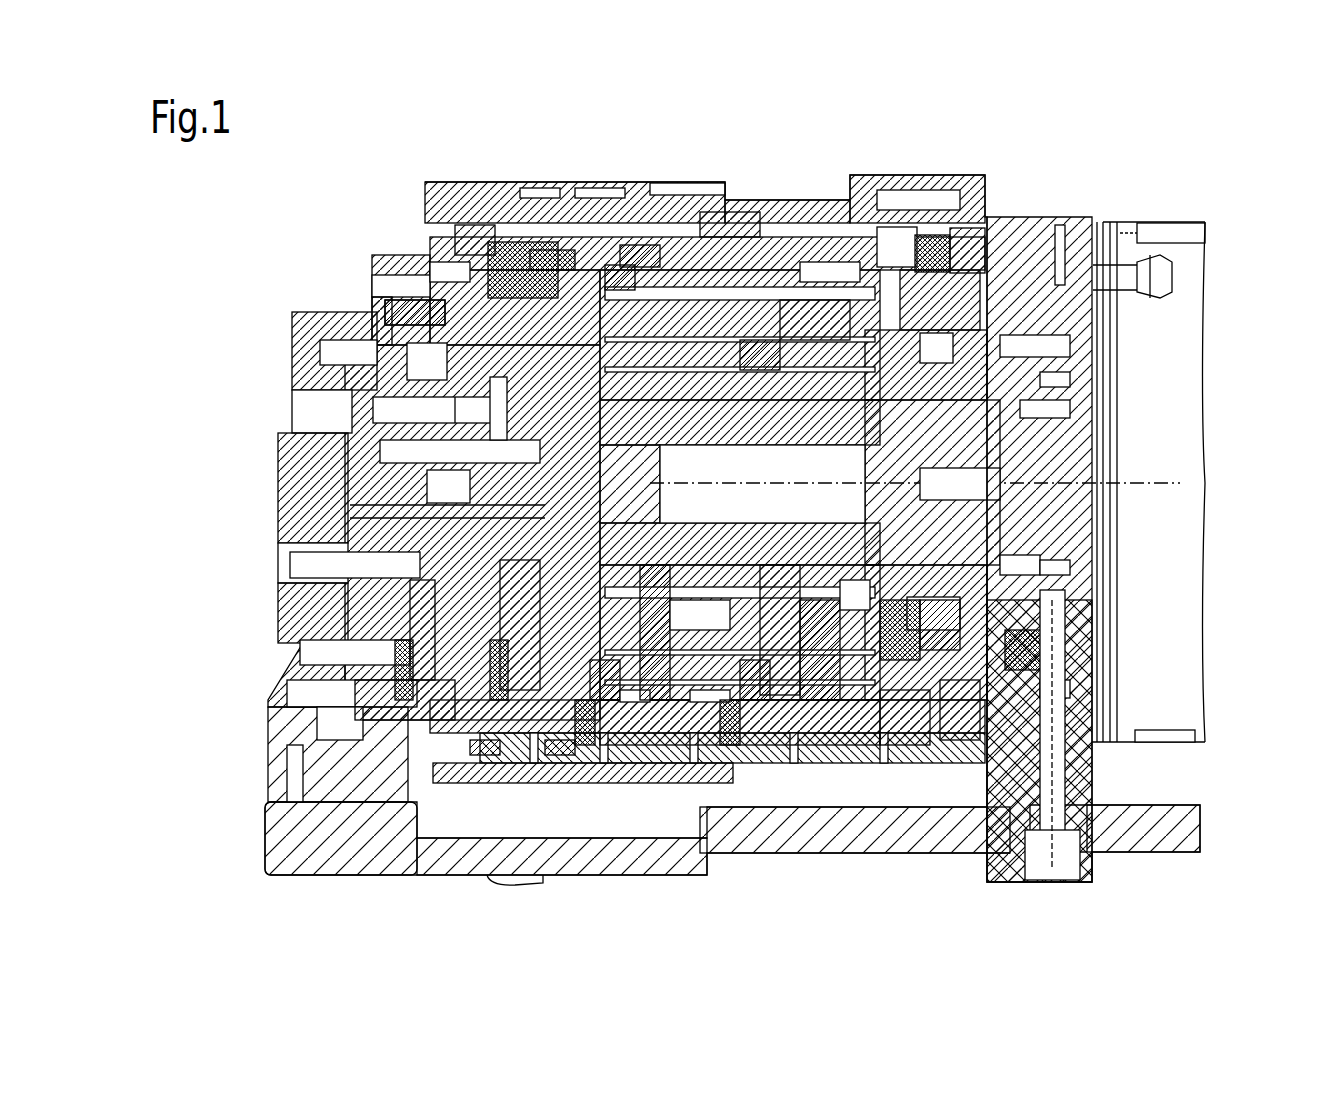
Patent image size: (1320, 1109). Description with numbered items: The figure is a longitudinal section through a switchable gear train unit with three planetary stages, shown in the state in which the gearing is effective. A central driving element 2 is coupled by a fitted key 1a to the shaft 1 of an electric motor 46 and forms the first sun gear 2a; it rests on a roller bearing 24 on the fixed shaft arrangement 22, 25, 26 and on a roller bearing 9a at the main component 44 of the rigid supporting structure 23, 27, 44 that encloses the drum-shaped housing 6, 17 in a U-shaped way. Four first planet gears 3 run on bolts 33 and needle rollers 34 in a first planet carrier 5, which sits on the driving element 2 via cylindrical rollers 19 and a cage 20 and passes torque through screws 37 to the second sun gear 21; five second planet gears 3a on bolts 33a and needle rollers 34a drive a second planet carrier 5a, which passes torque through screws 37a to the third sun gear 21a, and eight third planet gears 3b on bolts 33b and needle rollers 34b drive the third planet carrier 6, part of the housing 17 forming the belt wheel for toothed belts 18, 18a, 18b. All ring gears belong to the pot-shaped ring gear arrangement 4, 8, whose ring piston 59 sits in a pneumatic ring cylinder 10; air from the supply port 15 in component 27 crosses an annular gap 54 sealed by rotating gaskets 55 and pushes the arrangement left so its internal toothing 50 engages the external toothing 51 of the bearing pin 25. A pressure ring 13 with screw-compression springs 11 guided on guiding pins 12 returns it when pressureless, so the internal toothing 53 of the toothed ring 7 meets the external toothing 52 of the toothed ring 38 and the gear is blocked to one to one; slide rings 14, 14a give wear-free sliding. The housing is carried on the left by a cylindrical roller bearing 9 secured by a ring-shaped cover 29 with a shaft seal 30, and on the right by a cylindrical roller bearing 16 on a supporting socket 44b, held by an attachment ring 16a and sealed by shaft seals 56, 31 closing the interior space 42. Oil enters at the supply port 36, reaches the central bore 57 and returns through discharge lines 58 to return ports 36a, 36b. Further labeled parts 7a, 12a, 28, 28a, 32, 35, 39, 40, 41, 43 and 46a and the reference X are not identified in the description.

The shaft 1 is at (1040, 490).
The fitted key 1a is at (1055, 440).
The central driving element 2 is at (1060, 535).
The first sun gear 2a is at (625, 700).
The first planet gears 3 is at (610, 740).
The second planet gears 3a is at (700, 740).
The third planet gears 3b is at (890, 720).
The pot-shaped ring gear arrangement 4 is at (685, 690).
The first planet carrier 5 is at (655, 700).
The second planet carrier 5a is at (822, 700).
The third planet carrier 6 is at (1080, 790).
The toothed ring 7 is at (515, 690).
The sun gear 7a is at (540, 247).
The pot-shaped ring gear arrangement 8 is at (470, 720).
The cylindrical roller bearing 9 is at (303, 643).
The roller bearing 9a is at (1070, 570).
The pneumatic ring cylinder 10 is at (1045, 225).
The screw-compression springs 11 is at (452, 295).
The guiding pins 12 is at (420, 258).
The cover flange 12a is at (378, 298).
The pressure ring 13 is at (470, 245).
The slide ring 14 is at (485, 295).
The slide ring 14a is at (980, 225).
The supply port 15 is at (283, 487).
The cylindrical roller bearing 16 is at (1065, 650).
The attachment ring 16a is at (1100, 690).
The housing 17 is at (730, 300).
The toothed belt 18 is at (482, 200).
The toothed belt 18a is at (535, 200).
The toothed belt 18b is at (590, 197).
The cylindrical rollers 19 is at (800, 330).
The cage 20 is at (830, 275).
The second sun gear 21 is at (852, 215).
The third sun gear 21a is at (905, 300).
The fixed shaft arrangement component 22 is at (730, 217).
The supporting structure component 23 is at (318, 780).
The roller bearing 24 is at (760, 345).
The bearing pin 25 is at (372, 385).
The fixed shaft arrangement component 26 is at (355, 395).
The supporting structure component 27 is at (317, 735).
The bolt 28 is at (307, 422).
The plate 28a is at (288, 450).
The ring-shaped cover 29 is at (317, 687).
The shaft seal 30 is at (317, 665).
The shaft seal 31 is at (1055, 410).
The bolt 32 is at (1023, 857).
The bolt 33 is at (570, 720).
The bolt 33a is at (722, 735).
The bolts 33b is at (905, 700).
The needle rollers 34 is at (600, 700).
The needle rollers 34a is at (758, 700).
The needle rollers 34b is at (920, 760).
The bearing 35 is at (525, 245).
The supply port 36 is at (283, 527).
The return port 36a is at (297, 577).
The return port 36b is at (1077, 873).
The screws 37 is at (785, 700).
The screws 37a is at (960, 740).
The toothed ring 38 is at (647, 250).
The ring 39 is at (603, 250).
The nut 40 is at (330, 700).
The cover plate 41 is at (683, 182).
The interior space 42 is at (852, 690).
The bolt 43 is at (1090, 347).
The main component 44 is at (1130, 240).
The supporting socket 44b is at (1050, 380).
The electric motor 46 is at (1130, 247).
The bolt 46a is at (1173, 272).
The internal toothing 50 is at (375, 297).
The external toothing 51 is at (415, 312).
The external toothing 52 is at (545, 745).
The internal toothing 53 is at (472, 745).
The annular gap 54 is at (378, 720).
The rotating gaskets 55 is at (352, 740).
The shaft seal 56 is at (1075, 235).
The central bore 57 is at (1035, 565).
The discharge lines 58 is at (1080, 745).
The ring piston 59 is at (930, 230).
The axis X is at (1185, 485).